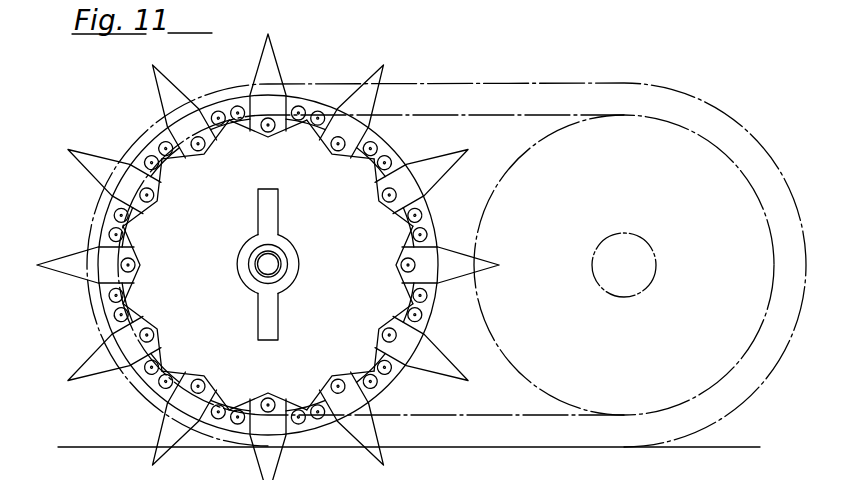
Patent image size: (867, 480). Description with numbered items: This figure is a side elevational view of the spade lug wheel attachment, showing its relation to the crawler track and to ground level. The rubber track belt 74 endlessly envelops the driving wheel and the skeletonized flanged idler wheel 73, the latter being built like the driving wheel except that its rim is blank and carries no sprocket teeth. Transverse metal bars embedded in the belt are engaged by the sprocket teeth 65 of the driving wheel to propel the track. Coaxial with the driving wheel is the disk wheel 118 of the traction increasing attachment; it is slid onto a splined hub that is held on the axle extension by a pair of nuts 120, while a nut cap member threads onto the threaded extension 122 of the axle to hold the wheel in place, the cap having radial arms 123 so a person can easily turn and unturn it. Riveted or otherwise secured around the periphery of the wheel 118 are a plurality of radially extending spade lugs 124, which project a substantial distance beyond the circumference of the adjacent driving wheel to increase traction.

The sprocket teeth 65 is at (425, 321).
The idler wheel 73 is at (546, 142).
The track belt 74 is at (568, 84).
The disk wheel 118 is at (178, 353).
The nuts 120 is at (422, 393).
The threaded extension 122 is at (277, 257).
The radial arms 123 is at (273, 328).
The spade lugs 124 is at (200, 100).